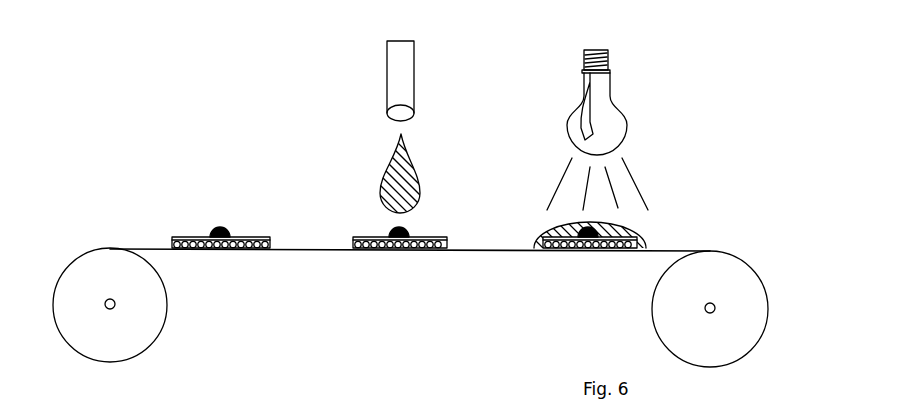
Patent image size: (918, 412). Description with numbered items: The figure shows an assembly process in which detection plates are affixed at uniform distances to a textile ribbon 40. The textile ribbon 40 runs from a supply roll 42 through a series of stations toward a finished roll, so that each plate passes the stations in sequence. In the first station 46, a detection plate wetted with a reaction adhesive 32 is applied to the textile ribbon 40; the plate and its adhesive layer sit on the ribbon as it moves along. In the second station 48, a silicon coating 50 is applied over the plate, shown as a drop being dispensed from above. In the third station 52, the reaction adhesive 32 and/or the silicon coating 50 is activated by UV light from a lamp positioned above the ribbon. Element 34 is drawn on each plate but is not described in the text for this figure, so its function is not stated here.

The reaction adhesive 32 is at (435, 230).
The LED die 34 is at (427, 223).
The textile ribbon 40 is at (313, 247).
The supply roll 42 is at (154, 303).
The first station 46 is at (218, 210).
The second station 48 is at (382, 292).
The silicon coating 50 is at (495, 190).
The third station 52 is at (540, 292).